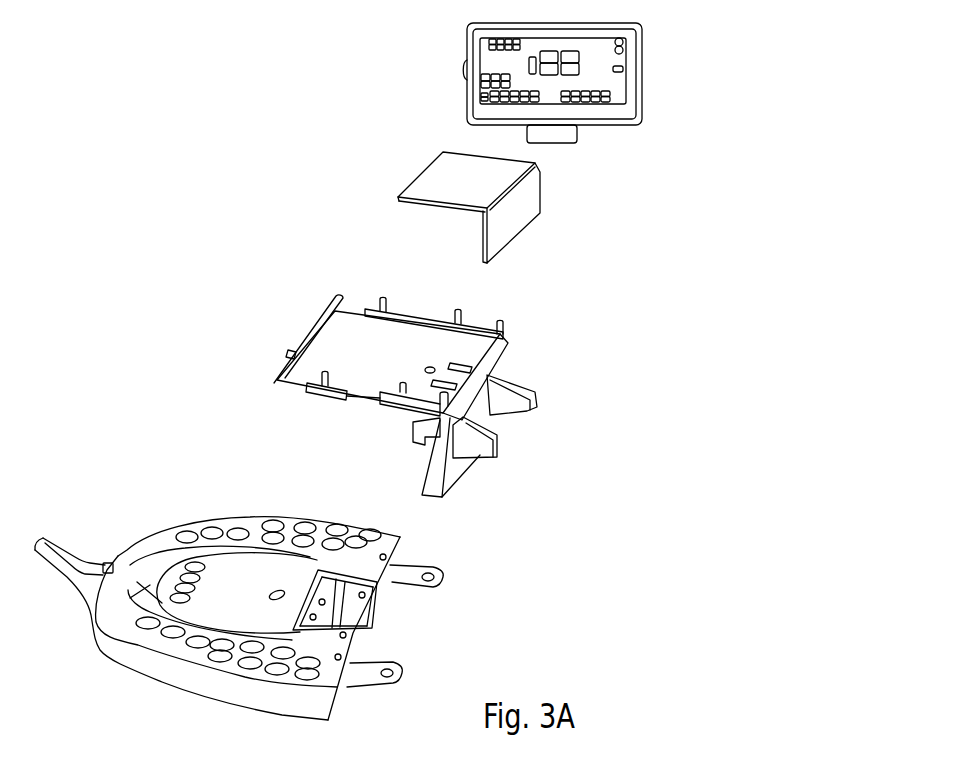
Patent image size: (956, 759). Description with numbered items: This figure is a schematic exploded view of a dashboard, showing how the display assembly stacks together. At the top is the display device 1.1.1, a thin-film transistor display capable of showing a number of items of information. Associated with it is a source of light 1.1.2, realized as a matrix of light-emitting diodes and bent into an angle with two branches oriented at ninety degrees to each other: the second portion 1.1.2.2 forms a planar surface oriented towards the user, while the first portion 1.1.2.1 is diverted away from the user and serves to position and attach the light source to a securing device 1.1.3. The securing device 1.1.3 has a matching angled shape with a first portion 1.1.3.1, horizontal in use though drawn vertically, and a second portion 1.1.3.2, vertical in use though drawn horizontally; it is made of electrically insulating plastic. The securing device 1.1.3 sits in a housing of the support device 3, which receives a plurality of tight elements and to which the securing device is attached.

The display device 1.1.1 is at (492, 93).
The source of light 1.1.2 is at (461, 191).
The second portion of the source of light 1.1.2.2 is at (455, 190).
The first portion of the source of light 1.1.2.1 is at (513, 218).
The securing device 1.1.3 is at (406, 396).
The second portion of the securing device 1.1.3.2 is at (337, 358).
The first portion of the securing device 1.1.3.1 is at (490, 422).
The support device 3 is at (133, 645).